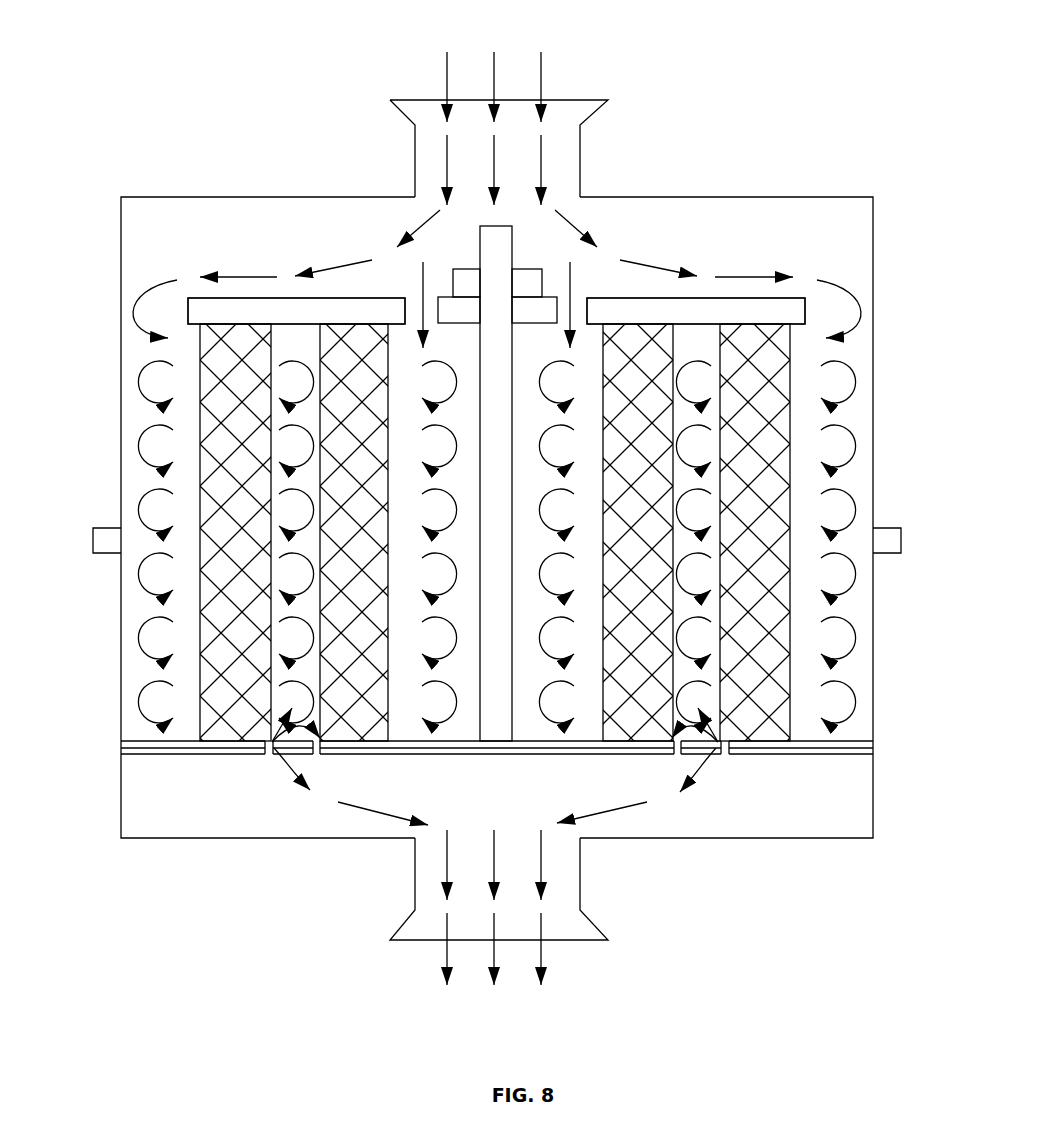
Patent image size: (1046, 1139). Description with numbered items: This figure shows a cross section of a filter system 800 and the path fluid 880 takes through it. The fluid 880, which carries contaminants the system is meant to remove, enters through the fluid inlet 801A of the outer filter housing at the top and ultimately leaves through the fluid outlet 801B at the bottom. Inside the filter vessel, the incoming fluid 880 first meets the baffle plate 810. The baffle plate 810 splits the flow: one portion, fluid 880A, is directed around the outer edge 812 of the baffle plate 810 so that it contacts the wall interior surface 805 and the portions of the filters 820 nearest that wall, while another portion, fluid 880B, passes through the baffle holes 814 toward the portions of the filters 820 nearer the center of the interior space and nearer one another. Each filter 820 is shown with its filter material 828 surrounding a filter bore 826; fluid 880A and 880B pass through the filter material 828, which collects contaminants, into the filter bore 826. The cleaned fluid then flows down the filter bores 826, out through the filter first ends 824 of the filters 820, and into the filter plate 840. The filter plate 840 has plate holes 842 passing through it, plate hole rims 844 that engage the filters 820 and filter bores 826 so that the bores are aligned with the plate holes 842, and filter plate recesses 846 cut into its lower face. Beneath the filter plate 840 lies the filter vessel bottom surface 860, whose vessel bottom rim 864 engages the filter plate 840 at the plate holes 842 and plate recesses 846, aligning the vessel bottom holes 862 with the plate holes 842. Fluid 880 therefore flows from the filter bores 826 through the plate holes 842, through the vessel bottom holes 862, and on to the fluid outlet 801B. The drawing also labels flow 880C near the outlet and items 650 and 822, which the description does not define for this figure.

The filter system 800 is at (730, 91).
The fluid inlet 801A is at (580, 160).
The fluid outlet 801B is at (580, 905).
The fluid 880 is at (497, 70).
The fluid portion directed around outer edge 880A is at (260, 277).
The fluid portion directed through baffle holes 880B is at (380, 260).
The fluid flow path 880C is at (383, 812).
The central tube 650 is at (512, 228).
The baffle holes 814 is at (432, 274).
The baffle plate 810 is at (287, 298).
The filter 820 is at (190, 302).
The outer edge 812 is at (190, 306).
The filter media edge 822 is at (396, 340).
The wall interior surface 805 is at (121, 413).
The filter bore 826 is at (290, 478).
The filter material 828 is at (228, 610).
The filter first end 824 is at (185, 738).
The filter plate 840 is at (121, 746).
The filter vessel bottom surface 860 is at (150, 756).
The vessel bottom rim 864 is at (265, 750).
The filter plate recesses 846 is at (276, 750).
The vessel bottom holes 862 is at (298, 750).
The plate holes 842 is at (268, 752).
The plate hole rim 844 is at (495, 712).